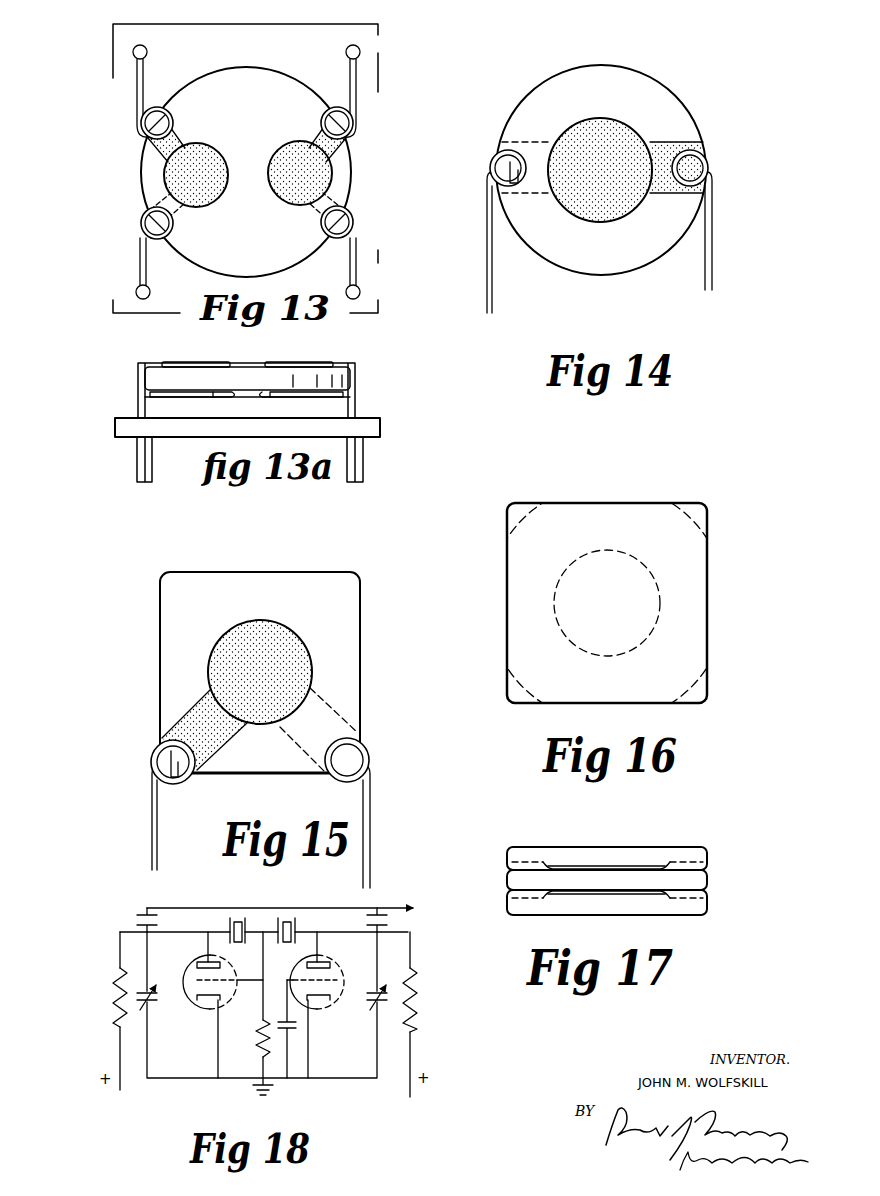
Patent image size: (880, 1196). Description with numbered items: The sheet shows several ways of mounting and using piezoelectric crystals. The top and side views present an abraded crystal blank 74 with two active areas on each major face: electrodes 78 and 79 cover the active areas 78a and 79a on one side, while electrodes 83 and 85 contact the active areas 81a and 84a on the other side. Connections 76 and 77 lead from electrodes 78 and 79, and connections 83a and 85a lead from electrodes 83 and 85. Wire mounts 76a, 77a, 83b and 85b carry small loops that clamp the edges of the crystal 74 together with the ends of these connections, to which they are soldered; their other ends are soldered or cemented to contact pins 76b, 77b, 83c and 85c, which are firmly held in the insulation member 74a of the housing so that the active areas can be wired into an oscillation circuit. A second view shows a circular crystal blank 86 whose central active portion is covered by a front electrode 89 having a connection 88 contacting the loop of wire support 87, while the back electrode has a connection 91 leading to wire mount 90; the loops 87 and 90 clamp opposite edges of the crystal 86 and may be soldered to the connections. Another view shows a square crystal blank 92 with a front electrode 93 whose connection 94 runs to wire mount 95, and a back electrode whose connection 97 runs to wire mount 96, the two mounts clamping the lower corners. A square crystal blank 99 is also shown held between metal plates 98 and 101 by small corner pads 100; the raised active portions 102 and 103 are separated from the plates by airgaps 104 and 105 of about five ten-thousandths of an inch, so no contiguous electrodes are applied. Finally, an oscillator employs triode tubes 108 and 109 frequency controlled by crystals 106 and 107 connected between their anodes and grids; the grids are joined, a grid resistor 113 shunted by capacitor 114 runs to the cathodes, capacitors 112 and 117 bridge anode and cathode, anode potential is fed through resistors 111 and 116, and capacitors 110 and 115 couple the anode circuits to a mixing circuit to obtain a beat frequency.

In FIG. 13, the crystal blank 74 is at (305, 101).
In FIG. 13, the insulation member 74a is at (190, 68).
In FIG. 13, the electrode connection 76 is at (342, 140).
In FIG. 13, the wire mount 76a is at (352, 117).
In FIG. 13, the contact pin 76b is at (360, 51).
In FIG. 13, the electrode connection 77 is at (152, 138).
In FIG. 13, the wire mount 77a is at (143, 116).
In FIG. 13, the contact pin 77b is at (146, 51).
In FIG. 13, the electrode 78 is at (313, 172).
In FIG. 13A, the electrode 78 is at (319, 362).
In FIG. 13A, the active area 78a is at (288, 363).
In FIG. 13, the electrode 79 is at (186, 163).
In FIG. 13A, the electrode 79 is at (180, 363).
In FIG. 13A, the active area 79a is at (192, 363).
In FIG. 13A, the active area 81a is at (222, 397).
In FIG. 13A, the electrode 83 is at (165, 397).
In FIG. 13, the electrode connection 83a is at (147, 197).
In FIG. 13, the wire mount 83b is at (145, 228).
In FIG. 13A, the wire mount 83b is at (138, 405).
In FIG. 13, the contact pin 83c is at (136, 291).
In FIG. 13A, the contact pin 83c is at (138, 455).
In FIG. 13A, the active area 84a is at (302, 397).
In FIG. 13A, the electrode 85 is at (267, 397).
In FIG. 13, the electrode connection 85a is at (347, 197).
In FIG. 13, the wire mount 85b is at (349, 228).
In FIG. 13A, the wire mount 85b is at (357, 401).
In FIG. 13, the contact pin 85c is at (360, 291).
In FIG. 13A, the contact pin 85c is at (360, 466).
In FIG. 14, the circular housing 86 is at (537, 97).
In FIG. 14, the wire support 87 is at (712, 168).
In FIG. 14, the connection 88 is at (672, 149).
In FIG. 14, the front electrode 89 is at (576, 137).
In FIG. 14, the wire mount 90 is at (487, 170).
In FIG. 14, the connection 91 is at (500, 143).
In FIG. 15, the crystal blank 92 is at (218, 588).
In FIG. 15, the front electrode 93 is at (255, 628).
In FIG. 15, the connection 94 is at (190, 722).
In FIG. 15, the wire mount 95 is at (153, 761).
In FIG. 15, the wire mount 96 is at (370, 751).
In FIG. 15, the connection 97 is at (338, 713).
In FIG. 16, the metal plate 98 is at (509, 627).
In FIG. 17, the metal plate 98 is at (516, 848).
In FIG. 17, the crystal blank 99 is at (512, 880).
In FIG. 17, the corner pads 100 is at (508, 862).
In FIG. 17, the metal plate 101 is at (545, 916).
In FIG. 17, the active portion 102 is at (590, 866).
In FIG. 17, the active portion 103 is at (590, 898).
In FIG. 17, the airgap 104 is at (629, 866).
In FIG. 17, the airgap 105 is at (628, 898).
In FIG. 18, the piezoelectric crystal 106 is at (234, 912).
In FIG. 18, the piezoelectric crystal 107 is at (291, 915).
In FIG. 18, the triode tube 108 is at (194, 963).
In FIG. 18, the triode tube 109 is at (330, 963).
In FIG. 18, the capacitor 110 is at (137, 918).
In FIG. 18, the resistor 111 is at (112, 997).
In FIG. 18, the capacitor 112 is at (157, 1003).
In FIG. 18, the grid resistor 113 is at (255, 1040).
In FIG. 18, the capacitor 114 is at (296, 1030).
In FIG. 18, the capacitor 115 is at (386, 920).
In FIG. 18, the resistor 116 is at (417, 1007).
In FIG. 18, the capacitor 117 is at (367, 1003).